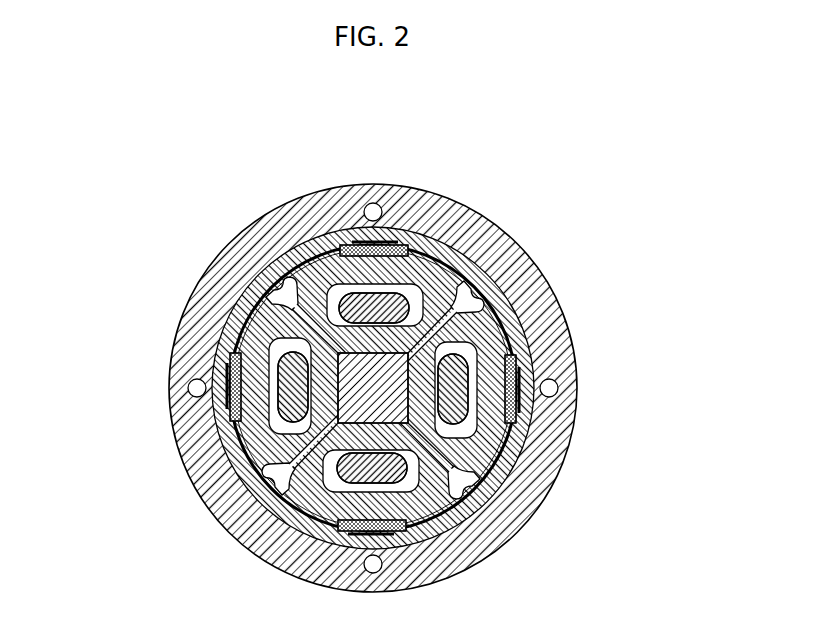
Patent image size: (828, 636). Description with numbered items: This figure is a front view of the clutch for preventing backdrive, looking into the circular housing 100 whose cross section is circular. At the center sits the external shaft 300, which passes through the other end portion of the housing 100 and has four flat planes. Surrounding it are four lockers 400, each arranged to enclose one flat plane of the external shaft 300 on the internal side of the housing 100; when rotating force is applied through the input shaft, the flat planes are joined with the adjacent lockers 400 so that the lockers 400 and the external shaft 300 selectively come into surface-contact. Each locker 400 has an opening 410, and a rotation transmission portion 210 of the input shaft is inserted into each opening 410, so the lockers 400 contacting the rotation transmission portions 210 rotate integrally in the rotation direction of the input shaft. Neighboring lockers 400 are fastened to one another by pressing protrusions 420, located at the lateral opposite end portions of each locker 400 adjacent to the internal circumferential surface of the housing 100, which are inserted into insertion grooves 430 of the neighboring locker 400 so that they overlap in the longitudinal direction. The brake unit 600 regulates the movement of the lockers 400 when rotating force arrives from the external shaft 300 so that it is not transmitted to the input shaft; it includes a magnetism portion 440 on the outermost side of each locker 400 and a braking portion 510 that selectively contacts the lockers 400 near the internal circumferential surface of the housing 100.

The housing 100 is at (513, 258).
The rotation transmission portion 210 is at (403, 300).
The external shaft 300 is at (400, 403).
The locker 400 is at (238, 304).
The opening 410 is at (397, 246).
The pressing protrusion 420 is at (292, 290).
The insertion groove 430 is at (280, 278).
The magnetism portion 440 is at (352, 245).
The braking portion 510 is at (386, 242).
The brake unit 600 is at (373, 305).